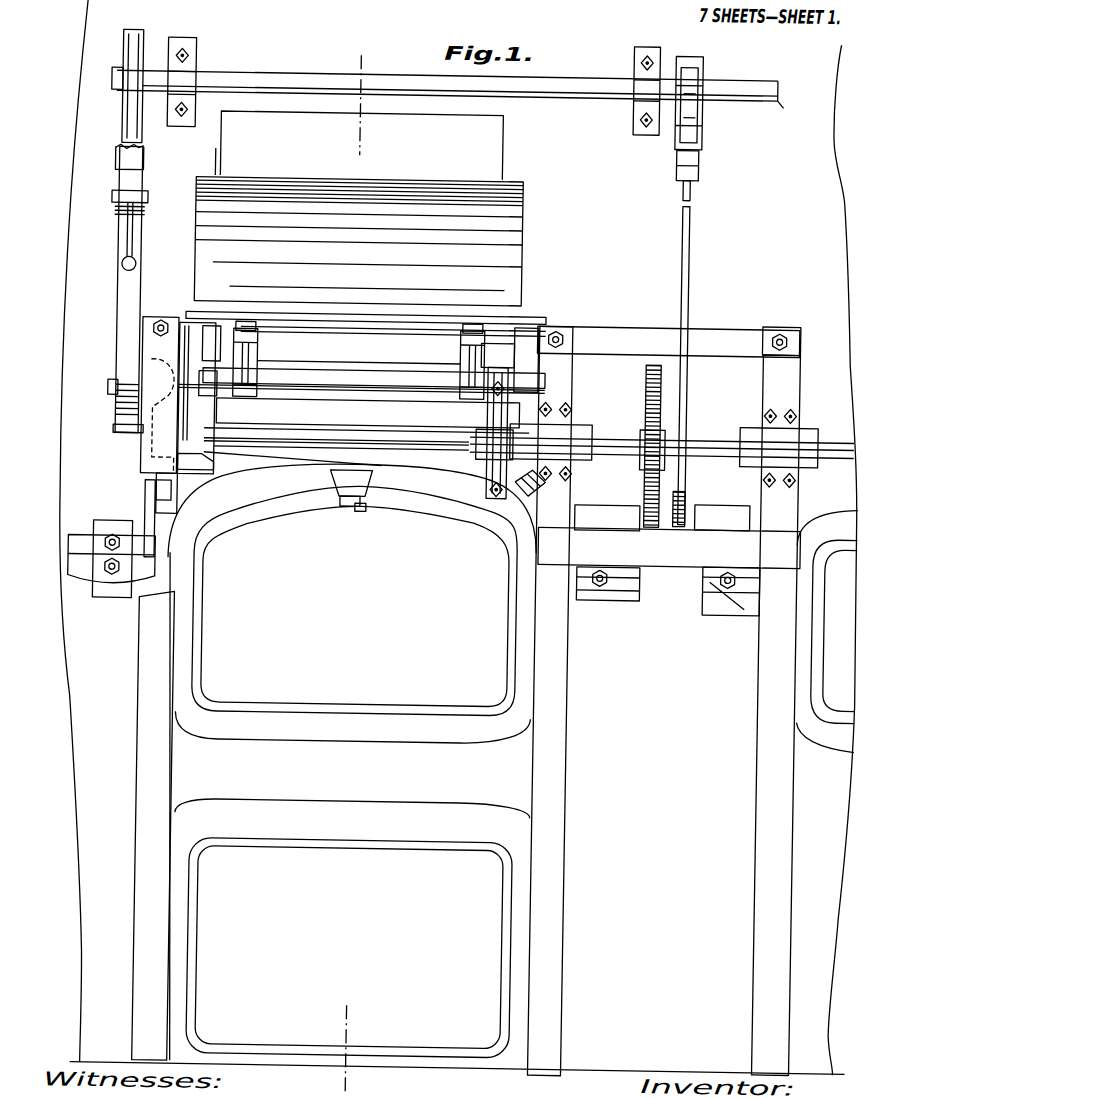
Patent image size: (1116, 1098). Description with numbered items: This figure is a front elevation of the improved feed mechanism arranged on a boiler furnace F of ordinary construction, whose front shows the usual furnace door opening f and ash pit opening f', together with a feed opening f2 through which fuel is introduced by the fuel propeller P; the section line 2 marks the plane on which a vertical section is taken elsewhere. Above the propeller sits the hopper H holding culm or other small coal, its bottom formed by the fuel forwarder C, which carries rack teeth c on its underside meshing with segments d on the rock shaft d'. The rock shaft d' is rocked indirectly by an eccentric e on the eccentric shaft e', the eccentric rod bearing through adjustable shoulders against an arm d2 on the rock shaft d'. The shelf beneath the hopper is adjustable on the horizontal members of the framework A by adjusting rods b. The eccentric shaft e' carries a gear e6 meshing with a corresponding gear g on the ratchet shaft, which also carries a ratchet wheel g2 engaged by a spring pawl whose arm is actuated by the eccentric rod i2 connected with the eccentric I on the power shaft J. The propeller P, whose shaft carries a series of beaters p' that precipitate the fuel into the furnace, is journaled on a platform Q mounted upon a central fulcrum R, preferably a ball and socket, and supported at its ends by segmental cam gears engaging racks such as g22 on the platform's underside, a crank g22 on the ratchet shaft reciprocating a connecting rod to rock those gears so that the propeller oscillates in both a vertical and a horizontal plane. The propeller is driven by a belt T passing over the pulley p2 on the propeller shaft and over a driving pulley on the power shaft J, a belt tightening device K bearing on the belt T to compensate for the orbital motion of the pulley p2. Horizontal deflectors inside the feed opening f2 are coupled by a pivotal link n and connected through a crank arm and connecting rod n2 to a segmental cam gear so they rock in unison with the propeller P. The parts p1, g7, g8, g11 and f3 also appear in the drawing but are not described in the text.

The section line 2— 2 is at (351, 560).
The power shaft J is at (167, 19).
The eccentric I is at (695, 129).
The eccentric rod i2 is at (695, 366).
The hopper H is at (359, 208).
The fuel forwarder C is at (255, 314).
The rack teeth c is at (237, 325).
The segments d is at (359, 363).
The fuel propeller P is at (373, 398).
The rock shaft d' is at (358, 375).
The arm d2 is at (501, 356).
The eccentric e is at (485, 433).
The beaters p' is at (368, 388).
The pawl p1 is at (105, 389).
The feed opening f2 is at (366, 437).
The pivotal link n is at (336, 440).
The platform Q is at (336, 451).
The eccentric shaft e' is at (647, 446).
The central fulcrum R is at (341, 483).
The block g7 is at (345, 508).
The stud g8 is at (362, 512).
The clamp g11 is at (520, 492).
The frame arch f3 is at (365, 408).
The belt T is at (118, 288).
The belt tightening device K is at (108, 202).
The pulley p2 is at (118, 438).
The adjusting rods b is at (158, 325).
The connecting rod n2 is at (144, 492).
The ratchet wheel g2 is at (696, 496).
The crank g22 is at (606, 497).
The framework A is at (467, 698).
The gear e6 is at (641, 446).
The gear g is at (652, 578).
The boiler furnace F is at (466, 785).
The furnace door opening f is at (354, 600).
The ash pit opening f' is at (349, 948).